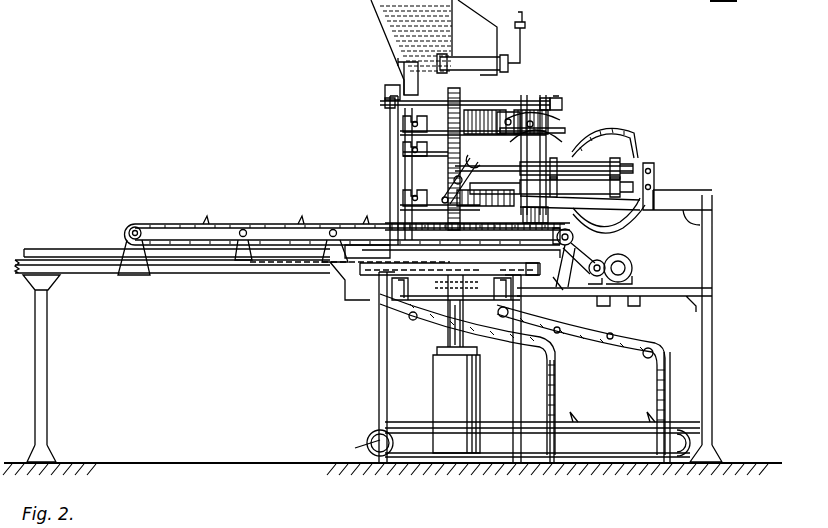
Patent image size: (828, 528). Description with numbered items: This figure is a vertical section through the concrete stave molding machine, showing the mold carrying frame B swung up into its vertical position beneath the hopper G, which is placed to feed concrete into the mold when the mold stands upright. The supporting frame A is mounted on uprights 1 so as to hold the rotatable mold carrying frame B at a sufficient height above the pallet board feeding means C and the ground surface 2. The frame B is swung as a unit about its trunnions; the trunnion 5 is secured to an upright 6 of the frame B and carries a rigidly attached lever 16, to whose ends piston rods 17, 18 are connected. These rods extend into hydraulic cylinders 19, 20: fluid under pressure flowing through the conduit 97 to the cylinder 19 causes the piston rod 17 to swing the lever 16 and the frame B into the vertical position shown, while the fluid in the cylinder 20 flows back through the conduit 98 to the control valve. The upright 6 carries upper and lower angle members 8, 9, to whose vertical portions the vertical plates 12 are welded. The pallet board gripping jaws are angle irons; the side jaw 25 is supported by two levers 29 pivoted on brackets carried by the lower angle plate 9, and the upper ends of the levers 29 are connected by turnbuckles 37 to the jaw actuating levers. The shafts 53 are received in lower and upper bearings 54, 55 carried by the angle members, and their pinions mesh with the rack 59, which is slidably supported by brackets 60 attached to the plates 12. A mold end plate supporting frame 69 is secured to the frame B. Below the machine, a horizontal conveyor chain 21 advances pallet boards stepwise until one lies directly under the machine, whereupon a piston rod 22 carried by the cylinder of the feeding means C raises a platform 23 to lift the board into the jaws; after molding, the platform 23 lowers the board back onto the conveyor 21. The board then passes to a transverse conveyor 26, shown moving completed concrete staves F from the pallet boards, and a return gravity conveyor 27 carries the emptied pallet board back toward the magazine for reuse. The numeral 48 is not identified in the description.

The uprights 1 is at (712, 266).
The ground surface 2 is at (405, 262).
The trunnion 5 is at (454, 179).
The upright 6 is at (425, 190).
The upper angle member 8 is at (523, 108).
The lower angle member 9 is at (404, 95).
The vertical plates 12 is at (548, 132).
The lever 16 is at (445, 152).
The piston rod 17 is at (540, 250).
The piston rod 18 is at (553, 161).
The hydraulic cylinder 19 is at (580, 241).
The hydraulic cylinder 20 is at (573, 162).
The horizontal conveyor chain 21 is at (354, 453).
The piston rod 22 is at (448, 342).
The platform 23 is at (456, 311).
The side jaw 25 is at (390, 179).
The transverse conveyor 26 is at (268, 240).
The return gravity conveyor 27 is at (650, 383).
The levers 29 is at (448, 104).
The turnbuckles 37 is at (562, 102).
The left post 48 is at (390, 160).
The shafts 53 is at (476, 130).
The lower bearing 54 is at (403, 124).
The upper bearing 55 is at (566, 132).
The rack 59 is at (460, 110).
The brackets 60 is at (453, 149).
The mold end plate supporting frame 69 is at (544, 276).
The conduit 97 is at (615, 221).
The conduit 98 is at (638, 140).
The supporting frame A is at (657, 196).
The mold carrying frame B is at (545, 104).
The pallet board feeding means C is at (433, 383).
The concrete stave F is at (33, 256).
The hopper G is at (365, 10).